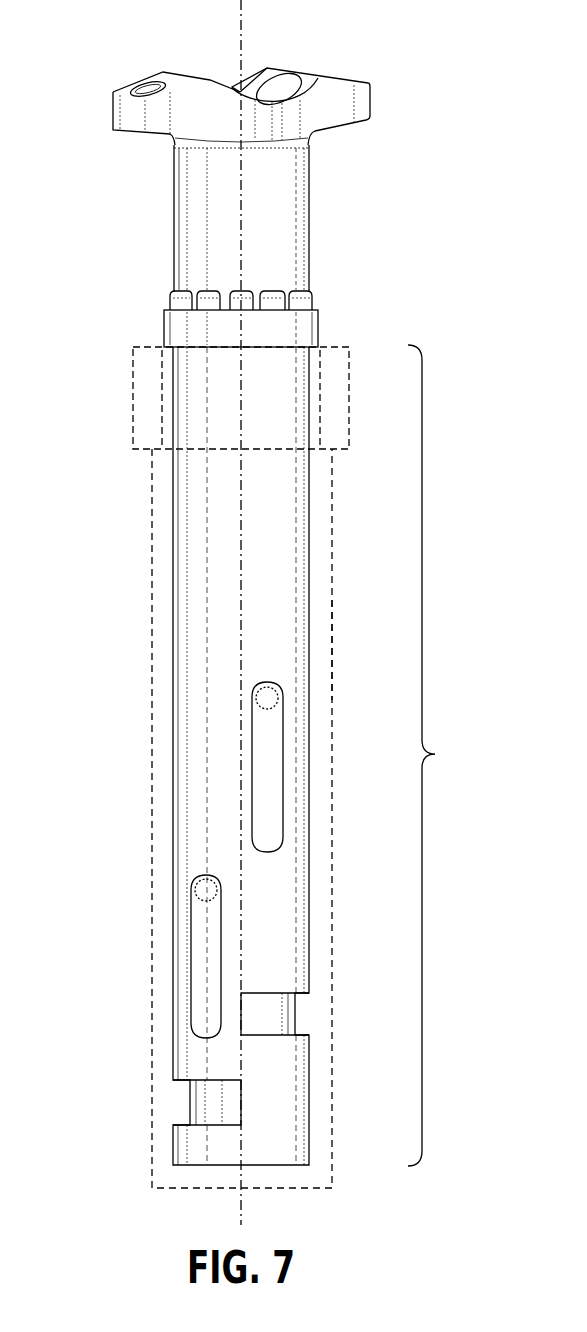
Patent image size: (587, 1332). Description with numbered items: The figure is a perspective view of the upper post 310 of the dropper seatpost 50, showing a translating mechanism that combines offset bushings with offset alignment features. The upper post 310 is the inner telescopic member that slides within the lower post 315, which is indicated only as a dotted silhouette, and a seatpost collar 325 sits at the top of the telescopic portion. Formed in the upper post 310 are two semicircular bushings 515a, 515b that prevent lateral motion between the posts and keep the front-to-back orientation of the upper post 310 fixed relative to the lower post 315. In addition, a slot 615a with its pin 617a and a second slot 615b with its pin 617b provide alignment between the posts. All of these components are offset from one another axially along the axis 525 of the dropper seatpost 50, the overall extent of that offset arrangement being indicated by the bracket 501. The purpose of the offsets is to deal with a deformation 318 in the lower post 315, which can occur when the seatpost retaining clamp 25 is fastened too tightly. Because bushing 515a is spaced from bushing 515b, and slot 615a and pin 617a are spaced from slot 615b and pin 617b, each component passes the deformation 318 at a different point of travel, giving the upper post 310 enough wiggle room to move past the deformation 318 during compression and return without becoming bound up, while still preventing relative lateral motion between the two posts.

The axis 525 is at (238, 53).
The dropper seatpost 50 is at (312, 34).
The seatpost collar 325 is at (162, 328).
The deformation 318 is at (162, 407).
The seatpost retaining clamp 25 is at (349, 390).
The lower post 315 is at (332, 655).
The upper post 310 is at (173, 618).
The shaft length 501 is at (443, 755).
The pin 617a is at (196, 890).
The pin 617b is at (277, 694).
The slot 615a is at (196, 973).
The slot 615b is at (283, 780).
The semicircular bushing 515a is at (190, 1105).
The semicircular bushing 515b is at (285, 1013).